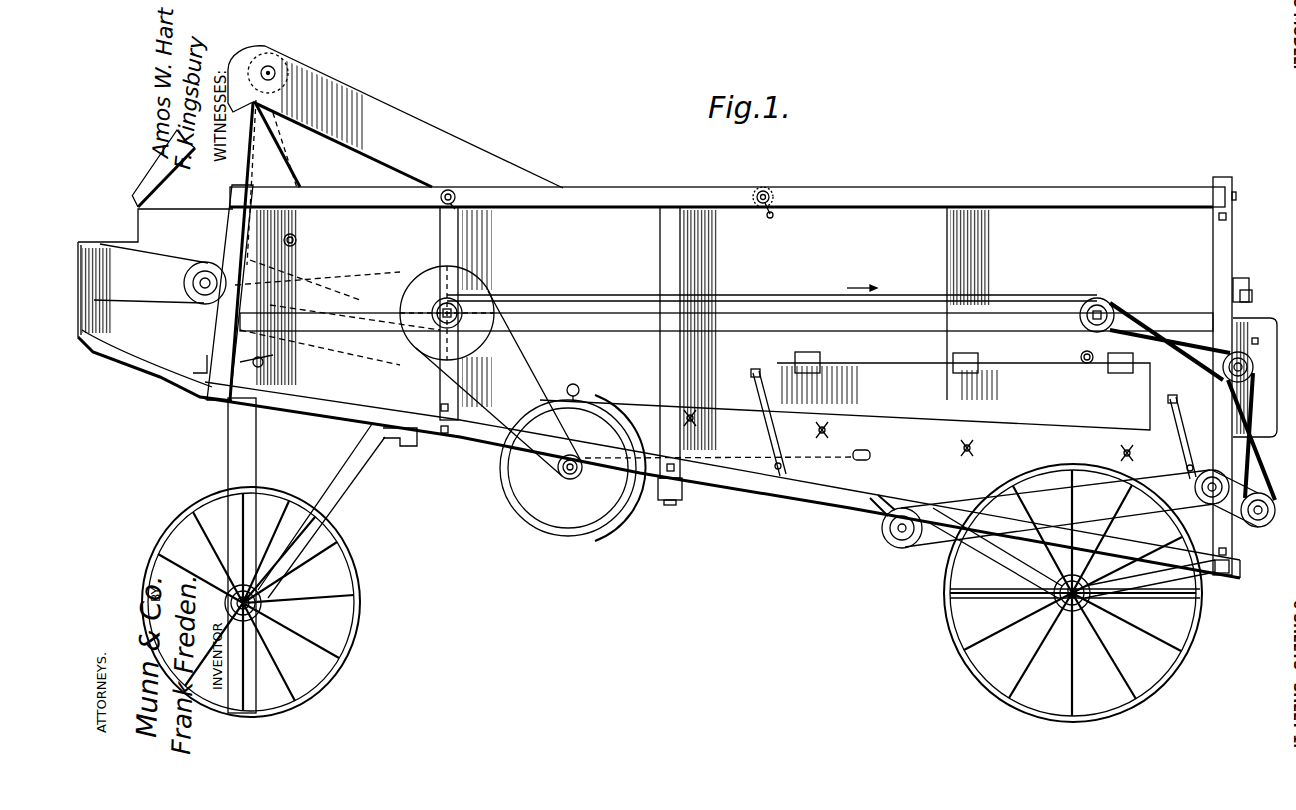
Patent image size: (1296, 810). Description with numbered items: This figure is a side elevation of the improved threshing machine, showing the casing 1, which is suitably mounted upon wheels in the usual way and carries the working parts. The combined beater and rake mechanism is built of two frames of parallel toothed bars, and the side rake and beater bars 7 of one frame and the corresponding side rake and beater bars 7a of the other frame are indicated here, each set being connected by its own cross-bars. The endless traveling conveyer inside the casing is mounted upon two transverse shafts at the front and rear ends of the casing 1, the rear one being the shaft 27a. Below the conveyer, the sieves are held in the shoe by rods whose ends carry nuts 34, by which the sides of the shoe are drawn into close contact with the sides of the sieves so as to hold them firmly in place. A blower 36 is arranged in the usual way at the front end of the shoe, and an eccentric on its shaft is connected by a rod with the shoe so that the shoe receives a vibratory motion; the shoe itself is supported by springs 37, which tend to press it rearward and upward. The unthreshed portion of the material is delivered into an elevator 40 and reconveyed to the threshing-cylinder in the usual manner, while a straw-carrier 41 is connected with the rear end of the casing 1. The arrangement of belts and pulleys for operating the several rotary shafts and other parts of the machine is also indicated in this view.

The casing 1 is at (697, 412).
The side rake and beater bars 7 is at (1238, 276).
The side rake and beater bars 7a is at (1250, 290).
The rear transverse shaft 27a is at (1255, 377).
The nuts 34 is at (1124, 452).
The blower 36 is at (531, 416).
The springs 37 is at (959, 424).
The elevator 40 is at (395, 155).
The straw-carrier 41 is at (1074, 467).